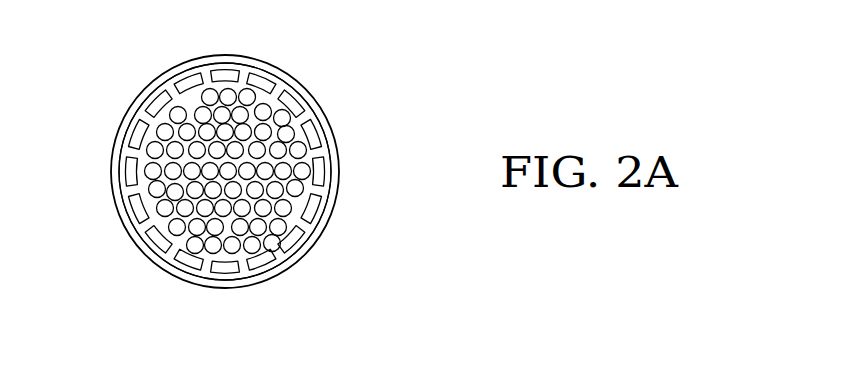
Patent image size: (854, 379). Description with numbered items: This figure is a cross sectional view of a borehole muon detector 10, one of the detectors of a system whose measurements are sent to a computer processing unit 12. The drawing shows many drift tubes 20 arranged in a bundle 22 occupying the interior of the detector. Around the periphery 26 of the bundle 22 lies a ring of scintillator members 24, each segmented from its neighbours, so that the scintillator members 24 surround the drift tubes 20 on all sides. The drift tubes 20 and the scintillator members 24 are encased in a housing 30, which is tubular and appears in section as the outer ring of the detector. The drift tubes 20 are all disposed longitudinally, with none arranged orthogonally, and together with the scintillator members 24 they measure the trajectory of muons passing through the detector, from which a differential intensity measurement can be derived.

The borehole muon detector 10 is at (364, 62).
The computer processing unit 12 is at (283, 72).
The drift tubes 20 is at (203, 118).
The bundle 22 is at (155, 194).
The scintillator members 24 is at (315, 138).
The periphery 26 is at (242, 249).
The housing 30 is at (335, 193).